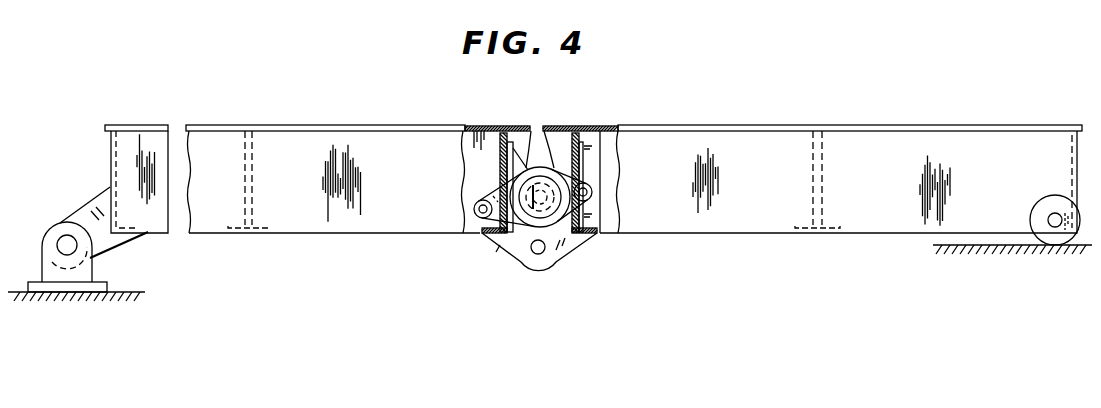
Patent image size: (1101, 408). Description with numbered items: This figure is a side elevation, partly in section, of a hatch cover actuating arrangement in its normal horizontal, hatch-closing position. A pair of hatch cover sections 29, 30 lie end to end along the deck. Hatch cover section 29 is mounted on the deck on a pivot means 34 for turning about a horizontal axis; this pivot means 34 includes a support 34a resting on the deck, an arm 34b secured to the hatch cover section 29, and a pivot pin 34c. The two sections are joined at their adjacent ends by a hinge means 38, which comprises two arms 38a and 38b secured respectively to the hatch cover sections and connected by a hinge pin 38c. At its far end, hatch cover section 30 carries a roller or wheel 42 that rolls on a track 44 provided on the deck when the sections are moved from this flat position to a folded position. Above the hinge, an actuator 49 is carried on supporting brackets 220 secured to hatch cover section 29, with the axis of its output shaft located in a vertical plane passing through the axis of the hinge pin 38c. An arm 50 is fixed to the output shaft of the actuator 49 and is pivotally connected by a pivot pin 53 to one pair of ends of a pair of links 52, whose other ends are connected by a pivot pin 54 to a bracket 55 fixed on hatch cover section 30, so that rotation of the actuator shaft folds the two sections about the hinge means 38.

The hatch cover section 29 is at (410, 125).
The hatch cover section 30 is at (737, 130).
The pivot means 34 is at (47, 275).
The support 34a is at (93, 278).
The arm 34b is at (110, 188).
The pivot pin 34c is at (65, 243).
The hinge means 38 is at (521, 256).
The arm 38a is at (583, 250).
The arm 38b is at (508, 250).
The hinge pin 38c is at (544, 252).
The roller 42 is at (1052, 236).
The track 44 is at (970, 243).
The actuator 49 is at (567, 127).
The arm 50 is at (493, 182).
The links 52 is at (545, 167).
The pivot pin 53 is at (477, 209).
The pivot pin 54 is at (597, 188).
The bracket 55 is at (595, 160).
The supporting brackets 220 is at (523, 146).